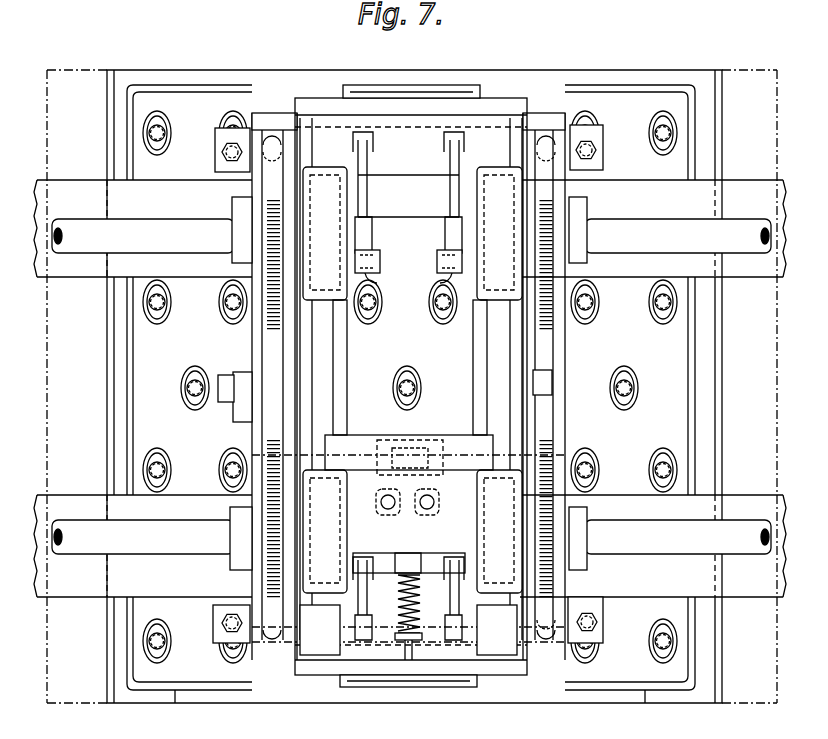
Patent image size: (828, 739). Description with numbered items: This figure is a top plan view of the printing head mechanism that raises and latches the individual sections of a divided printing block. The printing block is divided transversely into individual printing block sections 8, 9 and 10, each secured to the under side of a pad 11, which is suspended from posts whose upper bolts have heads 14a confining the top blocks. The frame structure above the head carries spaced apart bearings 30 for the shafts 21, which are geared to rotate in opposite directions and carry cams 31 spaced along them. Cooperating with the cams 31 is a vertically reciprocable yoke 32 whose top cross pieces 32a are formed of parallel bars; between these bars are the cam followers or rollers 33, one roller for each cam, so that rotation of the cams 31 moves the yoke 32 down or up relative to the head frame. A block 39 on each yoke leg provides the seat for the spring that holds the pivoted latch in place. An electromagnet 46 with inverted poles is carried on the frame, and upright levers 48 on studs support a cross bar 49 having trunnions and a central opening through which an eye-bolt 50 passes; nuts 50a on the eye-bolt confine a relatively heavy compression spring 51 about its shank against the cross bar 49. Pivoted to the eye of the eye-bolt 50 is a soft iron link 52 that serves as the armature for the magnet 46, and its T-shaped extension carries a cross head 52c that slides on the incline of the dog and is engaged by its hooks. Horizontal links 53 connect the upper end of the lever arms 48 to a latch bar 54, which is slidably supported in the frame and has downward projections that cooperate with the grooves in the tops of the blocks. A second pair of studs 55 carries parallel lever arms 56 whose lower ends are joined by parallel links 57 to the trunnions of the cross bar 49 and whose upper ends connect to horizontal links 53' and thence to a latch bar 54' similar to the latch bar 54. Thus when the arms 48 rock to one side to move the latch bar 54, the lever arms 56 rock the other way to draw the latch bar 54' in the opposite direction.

The printing block section 8 is at (532, 74).
The printing block section 9 is at (78, 72).
The printing block section 10 is at (742, 73).
The pad 11 is at (190, 90).
The head of the bolt 14a is at (548, 636).
The shaft 21 is at (410, 388).
The bearing 30 is at (412, 380).
The cam 31 is at (272, 318).
The yoke 32 is at (545, 357).
The top cross piece 32a is at (282, 349).
The cam follower roller 33 is at (262, 224).
The block 39 is at (248, 173).
The electromagnet 46 is at (410, 512).
The upright lever 48 is at (452, 566).
The cross bar 49 is at (445, 605).
The eye-bolt 50 is at (408, 652).
The nut 50a is at (416, 641).
The compression spring 51 is at (420, 622).
The link 52 is at (410, 532).
The cross head 52c is at (420, 460).
The horizontal link 53 is at (376, 598).
The horizontal link 53' is at (408, 192).
The latch bar 54 is at (382, 693).
The latch bar 54' is at (432, 96).
The stud 55 is at (435, 272).
The lever arm 56 is at (444, 252).
The link 57 is at (338, 350).